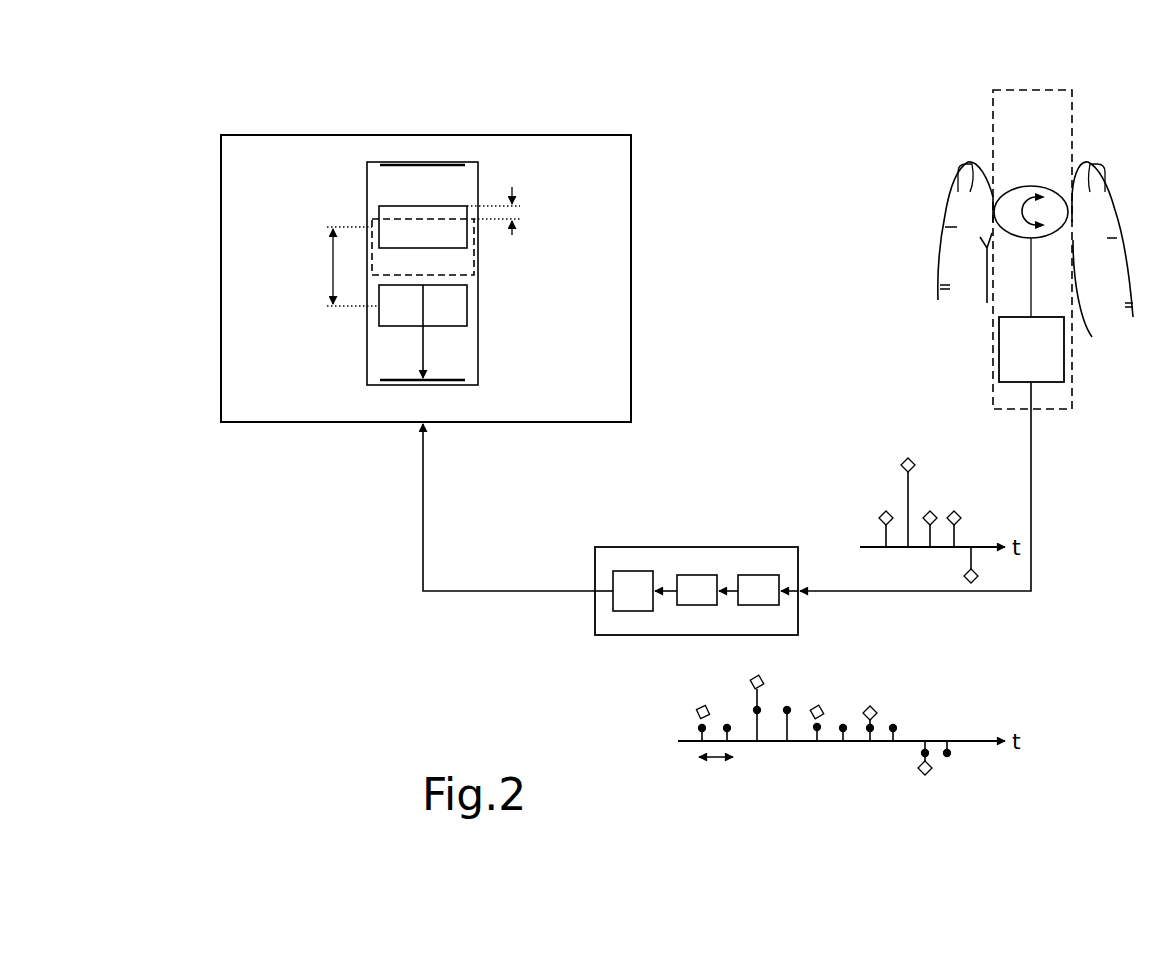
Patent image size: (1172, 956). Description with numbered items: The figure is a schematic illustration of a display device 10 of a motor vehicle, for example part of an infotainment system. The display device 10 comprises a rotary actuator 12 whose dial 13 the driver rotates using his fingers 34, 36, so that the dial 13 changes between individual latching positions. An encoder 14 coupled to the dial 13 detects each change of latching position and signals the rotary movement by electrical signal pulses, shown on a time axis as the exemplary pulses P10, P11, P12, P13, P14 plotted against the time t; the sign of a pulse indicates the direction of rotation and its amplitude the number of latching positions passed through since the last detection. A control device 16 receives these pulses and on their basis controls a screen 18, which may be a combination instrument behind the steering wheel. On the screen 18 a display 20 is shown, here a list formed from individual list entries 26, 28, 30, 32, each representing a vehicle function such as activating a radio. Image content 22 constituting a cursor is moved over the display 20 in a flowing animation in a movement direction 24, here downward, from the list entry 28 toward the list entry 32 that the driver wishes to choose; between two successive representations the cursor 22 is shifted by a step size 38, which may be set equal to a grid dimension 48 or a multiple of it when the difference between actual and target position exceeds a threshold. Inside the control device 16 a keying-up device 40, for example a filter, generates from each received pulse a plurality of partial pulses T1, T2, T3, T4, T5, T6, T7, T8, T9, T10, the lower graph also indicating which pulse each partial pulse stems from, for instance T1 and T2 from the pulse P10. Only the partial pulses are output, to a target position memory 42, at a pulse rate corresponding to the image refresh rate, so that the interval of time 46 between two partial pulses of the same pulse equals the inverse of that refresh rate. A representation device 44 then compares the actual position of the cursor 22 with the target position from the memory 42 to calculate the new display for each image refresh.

The display device 10 is at (341, 579).
The rotary actuator 12 is at (1030, 90).
The dial 13 is at (1030, 186).
The encoder 14 is at (1064, 358).
The control device 16 is at (798, 620).
The screen 18 is at (631, 309).
The display 20 is at (634, 184).
The image content 22 is at (372, 275).
The movement direction 24 is at (423, 347).
The list entry 26 is at (463, 166).
The list entry 28 is at (467, 238).
The list entry 30 is at (467, 302).
The list entry 32 is at (463, 380).
The finger 34 is at (971, 160).
The finger 36 is at (1087, 160).
The step size 38 is at (512, 213).
The keying-up device 40 is at (760, 578).
The target position memory 42 is at (697, 578).
The representation device 44 is at (633, 573).
The interval of time 46 is at (712, 762).
The grid dimension 48 is at (333, 267).
The signal pulse P10 is at (886, 510).
The signal pulse P11 is at (906, 457).
The signal pulse P12 is at (931, 510).
The signal pulse P13 is at (961, 518).
The signal pulse P14 is at (978, 582).
The partial pulse T1 is at (698, 728).
The partial pulse T2 is at (726, 725).
The partial pulse T3 is at (758, 708).
The partial pulse T4 is at (790, 708).
The partial pulse T5 is at (820, 725).
The partial pulse T6 is at (846, 731).
The partial pulse T7 is at (873, 727).
The partial pulse T8 is at (897, 727).
The partial pulse T9 is at (930, 755).
The partial pulse T10 is at (950, 752).